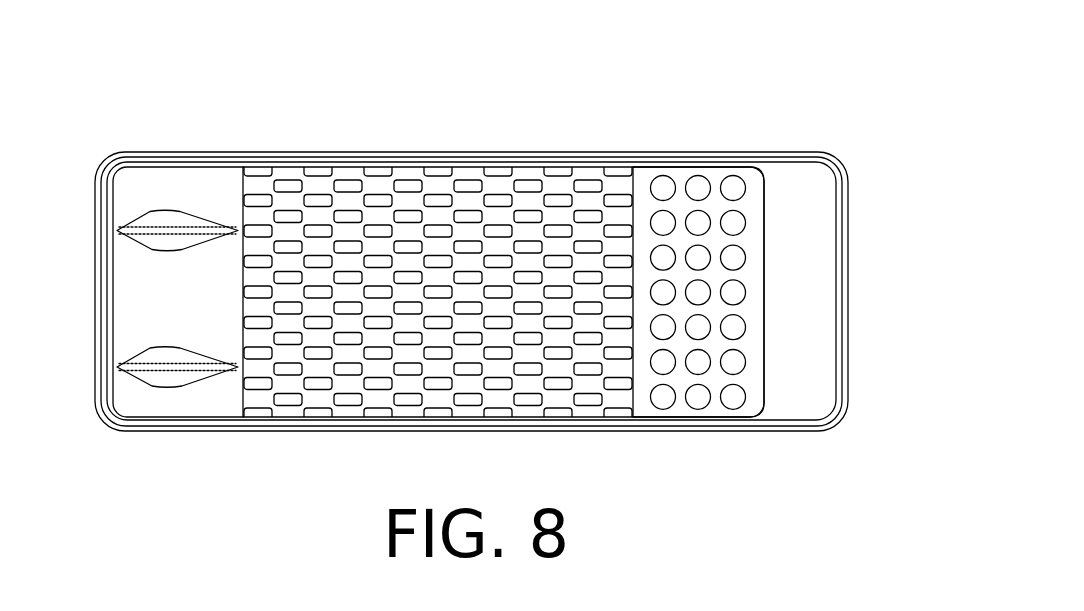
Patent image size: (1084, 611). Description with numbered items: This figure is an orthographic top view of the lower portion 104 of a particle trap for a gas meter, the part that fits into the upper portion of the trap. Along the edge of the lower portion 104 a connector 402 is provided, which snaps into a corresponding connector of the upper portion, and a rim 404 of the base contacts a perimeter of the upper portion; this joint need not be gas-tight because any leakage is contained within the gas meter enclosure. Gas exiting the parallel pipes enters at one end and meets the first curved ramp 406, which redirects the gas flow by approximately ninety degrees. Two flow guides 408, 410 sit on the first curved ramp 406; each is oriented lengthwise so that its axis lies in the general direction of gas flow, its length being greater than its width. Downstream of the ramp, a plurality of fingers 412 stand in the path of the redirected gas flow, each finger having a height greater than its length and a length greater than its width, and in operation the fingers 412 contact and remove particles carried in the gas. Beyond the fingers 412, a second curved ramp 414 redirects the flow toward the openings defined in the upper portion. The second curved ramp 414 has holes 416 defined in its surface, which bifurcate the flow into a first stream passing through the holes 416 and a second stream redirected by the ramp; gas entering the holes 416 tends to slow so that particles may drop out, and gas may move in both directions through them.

The lower portion 104 is at (755, 100).
The connector 402 is at (849, 291).
The rim 404 is at (460, 153).
The first curved ramp 406 is at (140, 163).
The flow guide 408 is at (161, 210).
The flow guide 410 is at (207, 380).
The fingers 412 is at (410, 183).
The second curved ramp 414 is at (716, 165).
The hole 416 is at (703, 410).